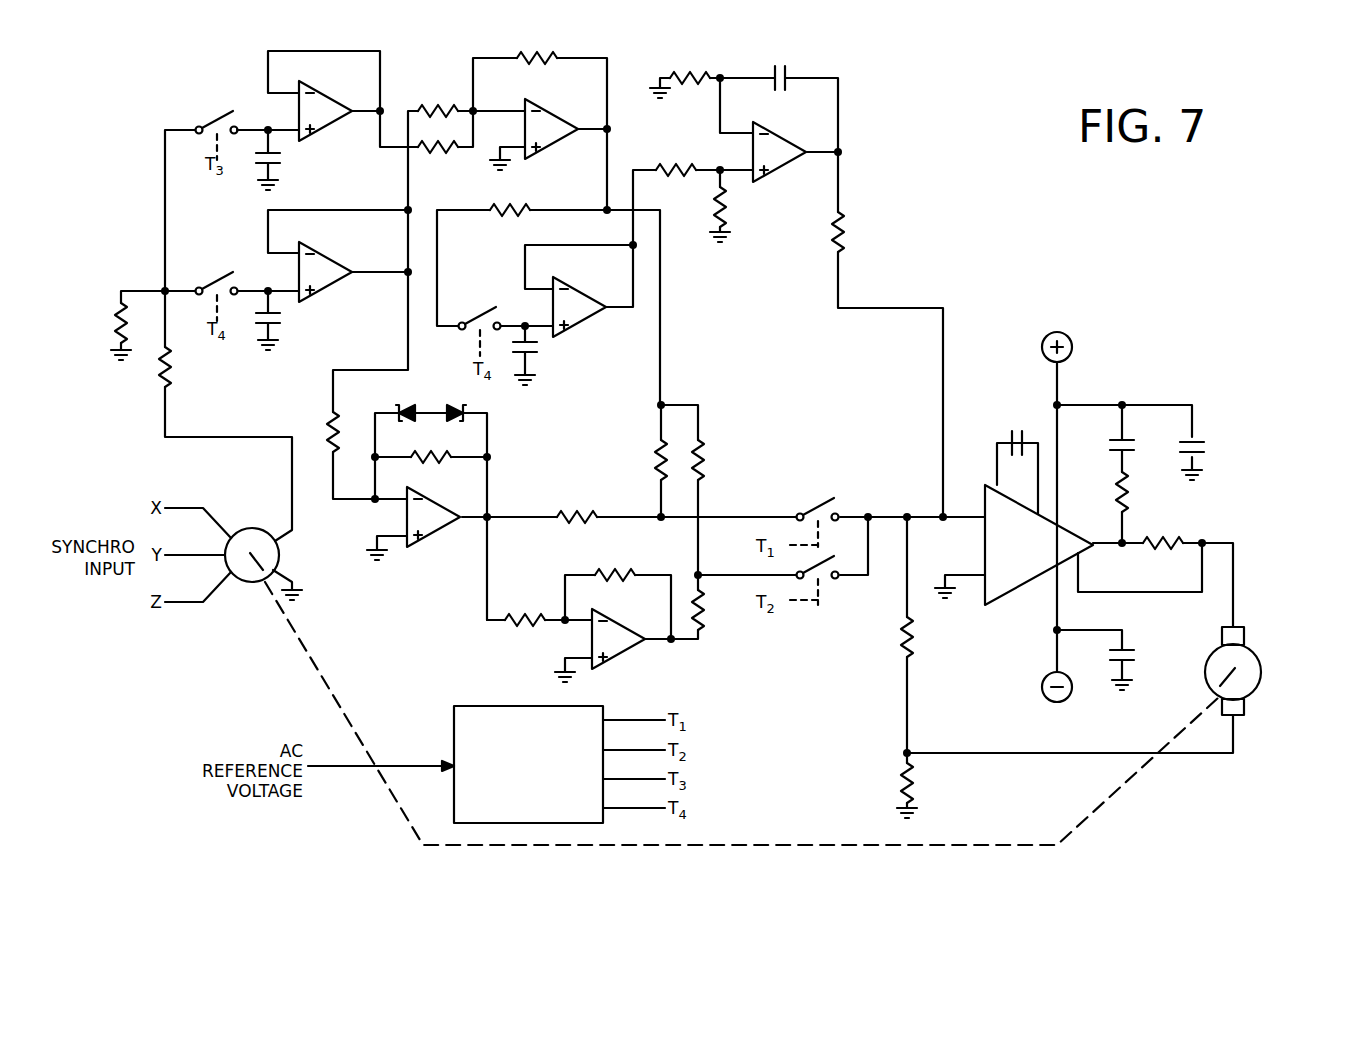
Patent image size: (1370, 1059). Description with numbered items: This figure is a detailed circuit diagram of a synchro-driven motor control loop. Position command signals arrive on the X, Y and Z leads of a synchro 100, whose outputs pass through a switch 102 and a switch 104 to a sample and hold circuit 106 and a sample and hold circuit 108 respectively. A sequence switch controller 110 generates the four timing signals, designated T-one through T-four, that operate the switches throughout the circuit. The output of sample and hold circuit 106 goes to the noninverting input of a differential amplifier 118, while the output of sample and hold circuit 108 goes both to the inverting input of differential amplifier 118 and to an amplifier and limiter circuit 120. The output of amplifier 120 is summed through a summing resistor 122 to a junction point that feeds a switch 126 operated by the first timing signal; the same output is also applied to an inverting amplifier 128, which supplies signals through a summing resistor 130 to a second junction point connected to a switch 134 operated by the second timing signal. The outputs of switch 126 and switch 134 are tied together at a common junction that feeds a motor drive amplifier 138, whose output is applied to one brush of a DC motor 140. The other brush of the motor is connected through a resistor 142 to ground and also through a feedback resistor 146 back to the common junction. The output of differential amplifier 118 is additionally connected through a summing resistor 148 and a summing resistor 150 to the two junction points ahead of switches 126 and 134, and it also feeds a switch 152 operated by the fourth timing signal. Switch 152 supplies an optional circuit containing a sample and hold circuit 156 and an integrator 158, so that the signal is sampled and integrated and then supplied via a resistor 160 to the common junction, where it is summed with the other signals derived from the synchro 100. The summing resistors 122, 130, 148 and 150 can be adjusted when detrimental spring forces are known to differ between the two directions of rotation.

The synchro 100 is at (253, 526).
The switch 102 is at (200, 106).
The switch 104 is at (220, 266).
The sample and hold circuit 106 is at (402, 62).
The sample and hold circuit 108 is at (342, 308).
The sequence switch controller 110 is at (454, 724).
The differential amplifier 118 is at (634, 60).
The amplifier and limiter circuit 120 is at (434, 546).
The summing resistor 122 is at (577, 511).
The switch 126 is at (816, 496).
The inverting amplifier 128 is at (642, 658).
The summing resistor 130 is at (703, 612).
The switch 134 is at (828, 612).
The motor drive amplifier 138 is at (1010, 418).
The DC motor 140 is at (1263, 672).
The resistor 142 is at (903, 783).
The feedback resistor 146 is at (912, 637).
The summing resistor 148 is at (656, 462).
The summing resistor 150 is at (703, 460).
The switch 152 is at (472, 300).
The sample and hold circuit 156 is at (592, 333).
The integrator 158 is at (865, 86).
The resistor 160 is at (843, 232).